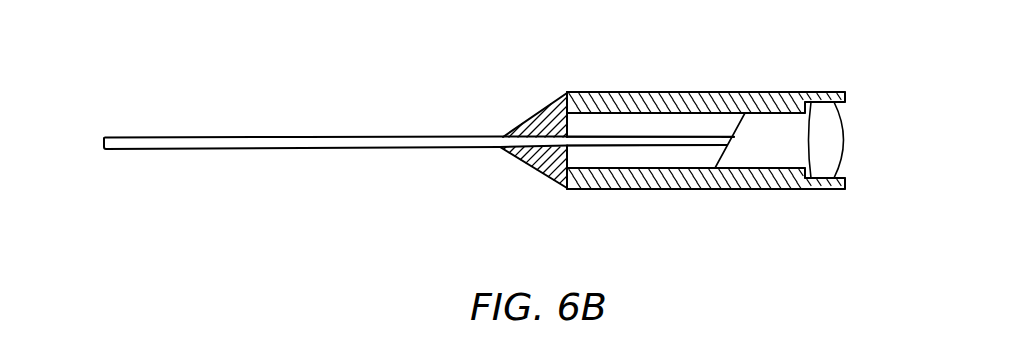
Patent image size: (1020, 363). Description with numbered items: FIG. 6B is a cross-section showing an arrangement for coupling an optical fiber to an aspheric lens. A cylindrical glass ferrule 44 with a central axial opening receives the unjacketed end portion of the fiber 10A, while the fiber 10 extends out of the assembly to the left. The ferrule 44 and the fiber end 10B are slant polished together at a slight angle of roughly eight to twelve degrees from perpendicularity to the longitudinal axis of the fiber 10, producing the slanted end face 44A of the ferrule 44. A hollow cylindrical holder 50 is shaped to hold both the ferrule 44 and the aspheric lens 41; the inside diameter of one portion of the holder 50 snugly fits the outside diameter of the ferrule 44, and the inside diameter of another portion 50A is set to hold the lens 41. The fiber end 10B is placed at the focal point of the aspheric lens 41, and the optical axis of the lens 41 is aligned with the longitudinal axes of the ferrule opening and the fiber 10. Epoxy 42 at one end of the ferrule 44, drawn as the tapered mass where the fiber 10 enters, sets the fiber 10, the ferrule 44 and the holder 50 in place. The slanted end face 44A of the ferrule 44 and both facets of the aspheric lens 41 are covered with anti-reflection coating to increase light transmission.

The fiber 10 is at (303, 137).
The unjacketed end portion of the fiber 10A is at (665, 138).
The fiber end 10B is at (733, 141).
The epoxy 42 is at (540, 115).
The hollow cylindrical holder 50 is at (637, 190).
The cylindrical glass ferrule 44 is at (655, 165).
The slanted end face 44A is at (716, 169).
The aspheric lens 41 is at (822, 170).
The portion of the holder 50A is at (845, 100).